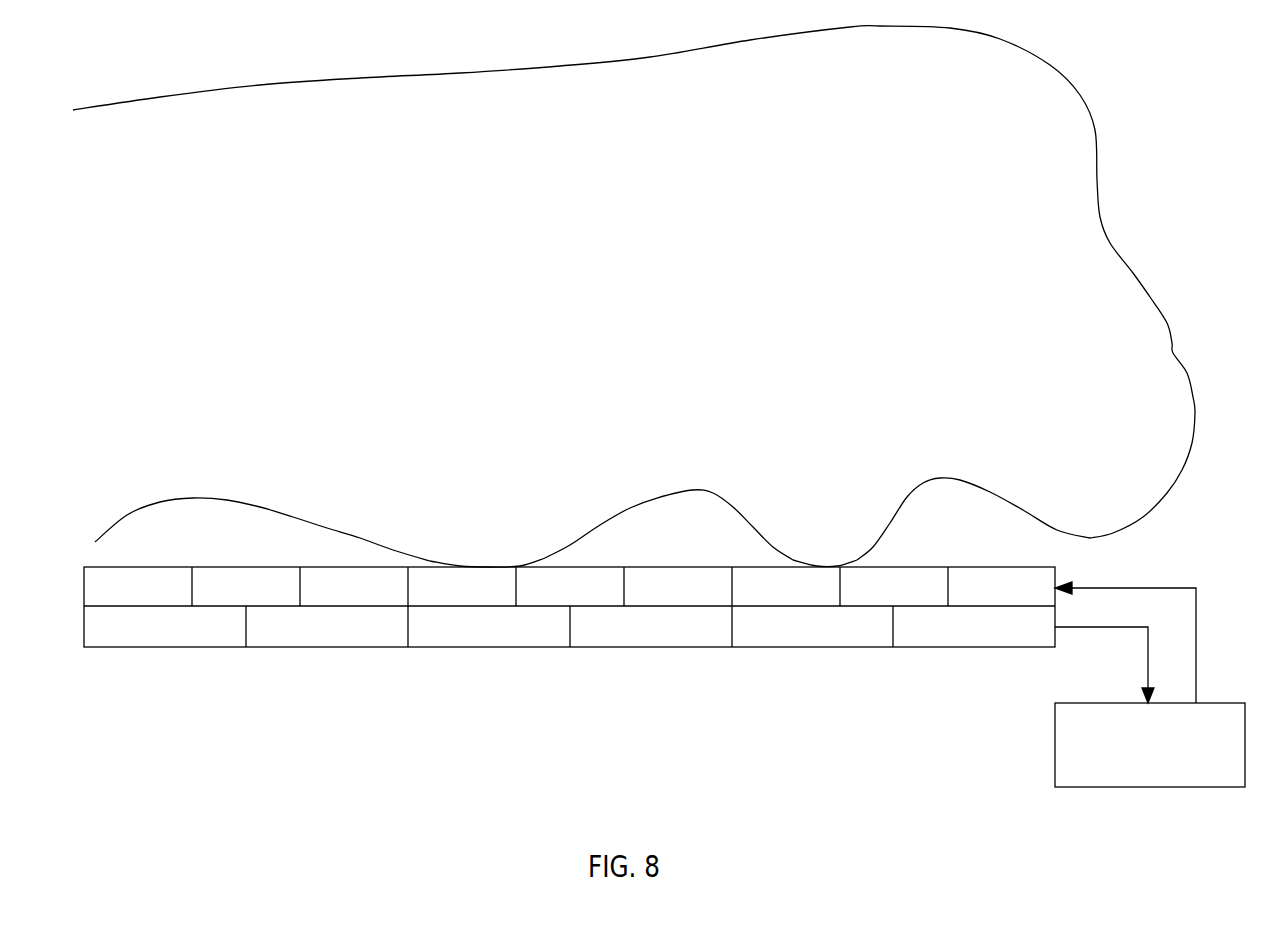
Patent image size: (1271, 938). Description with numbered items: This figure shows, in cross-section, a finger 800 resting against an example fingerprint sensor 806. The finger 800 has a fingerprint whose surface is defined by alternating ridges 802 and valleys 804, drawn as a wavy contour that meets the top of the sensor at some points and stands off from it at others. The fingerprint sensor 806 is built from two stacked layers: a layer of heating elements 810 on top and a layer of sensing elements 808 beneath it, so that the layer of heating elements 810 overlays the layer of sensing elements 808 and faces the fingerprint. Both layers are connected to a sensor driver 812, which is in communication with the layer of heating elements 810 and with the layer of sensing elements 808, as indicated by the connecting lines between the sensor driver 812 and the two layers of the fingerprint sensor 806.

The finger 800 is at (605, 222).
The ridges 802 is at (492, 552).
The valleys 804 is at (229, 527).
The fingerprint sensor 806 is at (288, 677).
The layer of sensing elements 808 is at (184, 641).
The layer of heating elements 810 is at (157, 601).
The sensor driver 812 is at (1213, 772).